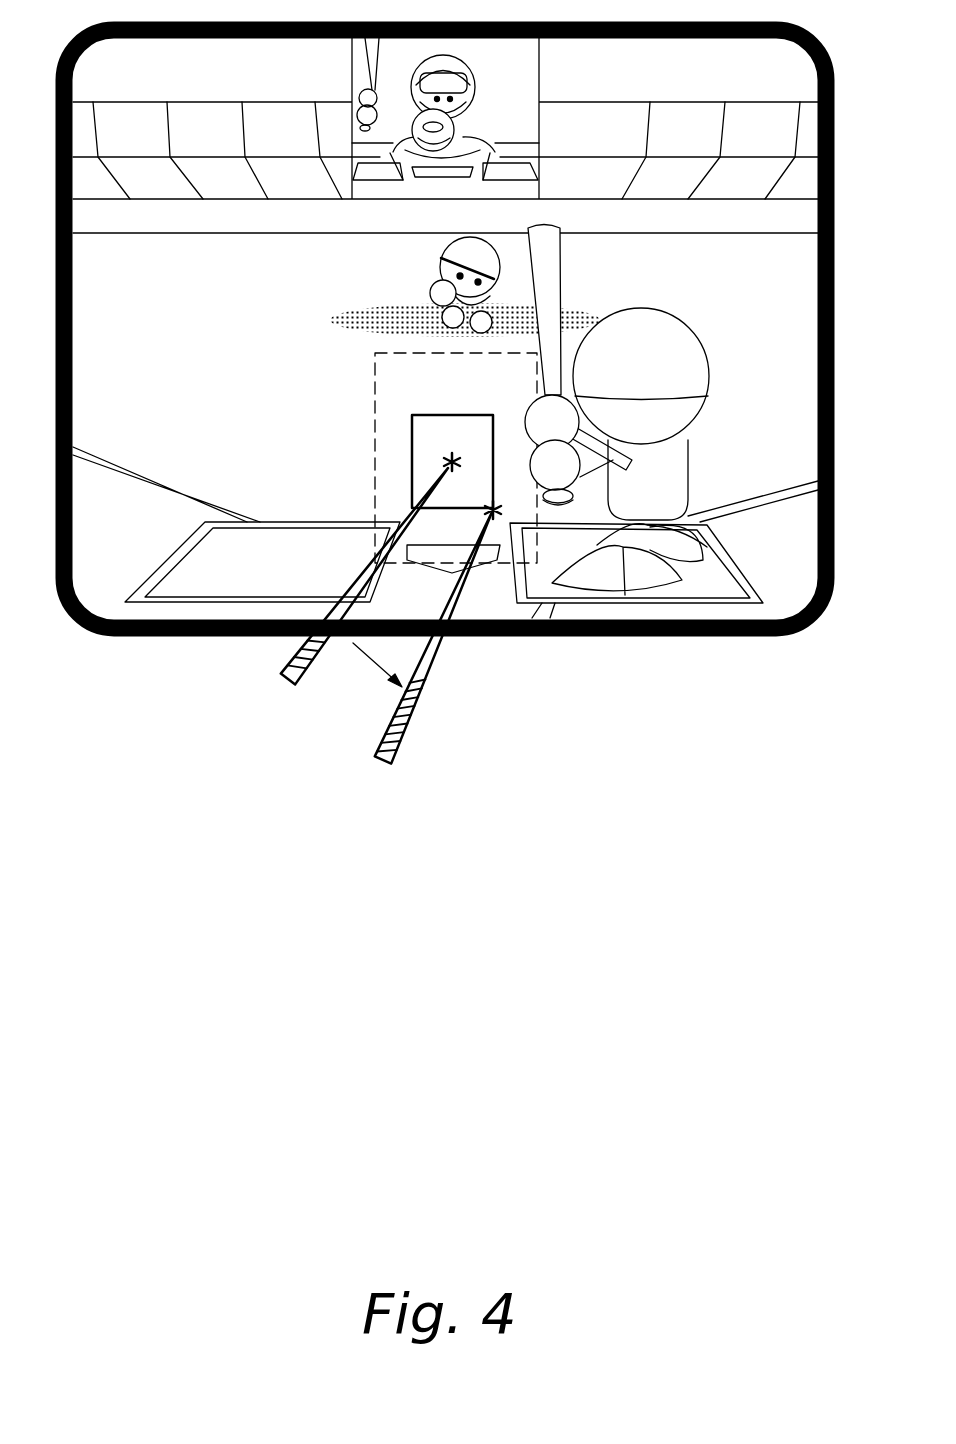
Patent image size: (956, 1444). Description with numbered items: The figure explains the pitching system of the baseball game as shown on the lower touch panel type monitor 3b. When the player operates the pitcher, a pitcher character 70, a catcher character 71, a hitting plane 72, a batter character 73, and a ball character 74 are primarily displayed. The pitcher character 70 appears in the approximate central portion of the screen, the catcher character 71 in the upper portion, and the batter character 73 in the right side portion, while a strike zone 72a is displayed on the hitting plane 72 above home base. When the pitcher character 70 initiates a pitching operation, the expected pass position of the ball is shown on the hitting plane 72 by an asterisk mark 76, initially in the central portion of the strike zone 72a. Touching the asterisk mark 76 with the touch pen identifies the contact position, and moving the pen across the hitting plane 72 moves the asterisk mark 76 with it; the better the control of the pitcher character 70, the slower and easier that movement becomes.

The lower touch panel type monitor 3b is at (665, 636).
The pitcher character 70 is at (452, 247).
The catcher character 71 is at (468, 82).
The hitting plane 72 is at (373, 402).
The strike zone 72a is at (410, 463).
The batter character 73 is at (672, 343).
The ball character 74 is at (432, 285).
The asterisk mark 76 is at (450, 457).